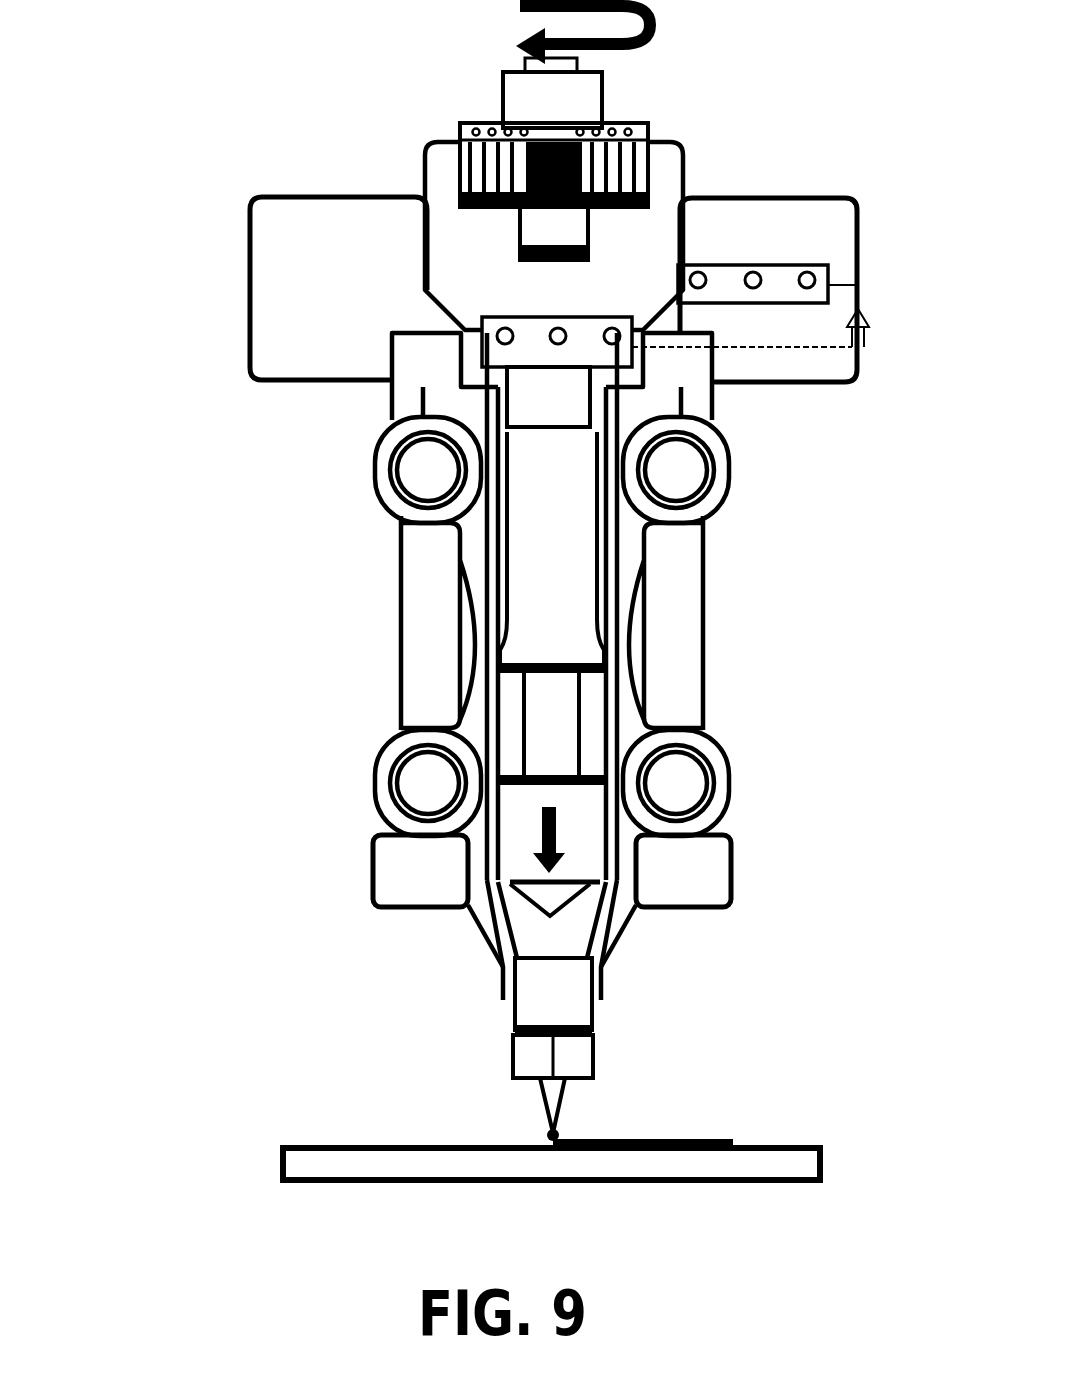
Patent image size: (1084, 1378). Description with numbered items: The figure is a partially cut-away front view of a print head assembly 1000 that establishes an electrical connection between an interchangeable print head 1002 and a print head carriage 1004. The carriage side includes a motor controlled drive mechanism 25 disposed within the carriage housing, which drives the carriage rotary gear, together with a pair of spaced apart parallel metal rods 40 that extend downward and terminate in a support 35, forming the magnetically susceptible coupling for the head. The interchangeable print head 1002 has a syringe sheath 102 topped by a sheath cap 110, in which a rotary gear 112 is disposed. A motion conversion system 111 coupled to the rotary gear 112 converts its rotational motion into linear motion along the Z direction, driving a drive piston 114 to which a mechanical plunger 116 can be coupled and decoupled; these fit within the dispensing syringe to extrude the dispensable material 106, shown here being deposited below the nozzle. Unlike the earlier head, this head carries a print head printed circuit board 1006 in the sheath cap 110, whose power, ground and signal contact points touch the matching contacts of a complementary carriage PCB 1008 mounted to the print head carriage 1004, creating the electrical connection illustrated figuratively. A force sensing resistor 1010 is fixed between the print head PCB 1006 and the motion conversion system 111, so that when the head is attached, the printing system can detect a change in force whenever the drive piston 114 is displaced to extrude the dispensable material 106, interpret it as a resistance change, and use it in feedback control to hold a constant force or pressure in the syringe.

The print head assembly 1000 is at (195, 68).
The interchangeable print head 1002 is at (708, 150).
The print head carriage 1004 is at (280, 182).
The print head printed circuit board 1006 is at (482, 352).
The carriage PCB 1008 is at (828, 280).
The force sensing resistor 1010 is at (522, 398).
The motor controlled drive mechanism 25 is at (580, 62).
The rotary gear 112 is at (478, 128).
The sheath cap 110 is at (447, 252).
The motion conversion system 111 is at (548, 565).
The syringe sheath 102 is at (650, 553).
The metal rods 40 is at (418, 623).
The drive piston 114 is at (548, 733).
The mechanical plunger 116 is at (520, 828).
The support 35 is at (672, 875).
The dispensable material 106 is at (560, 930).